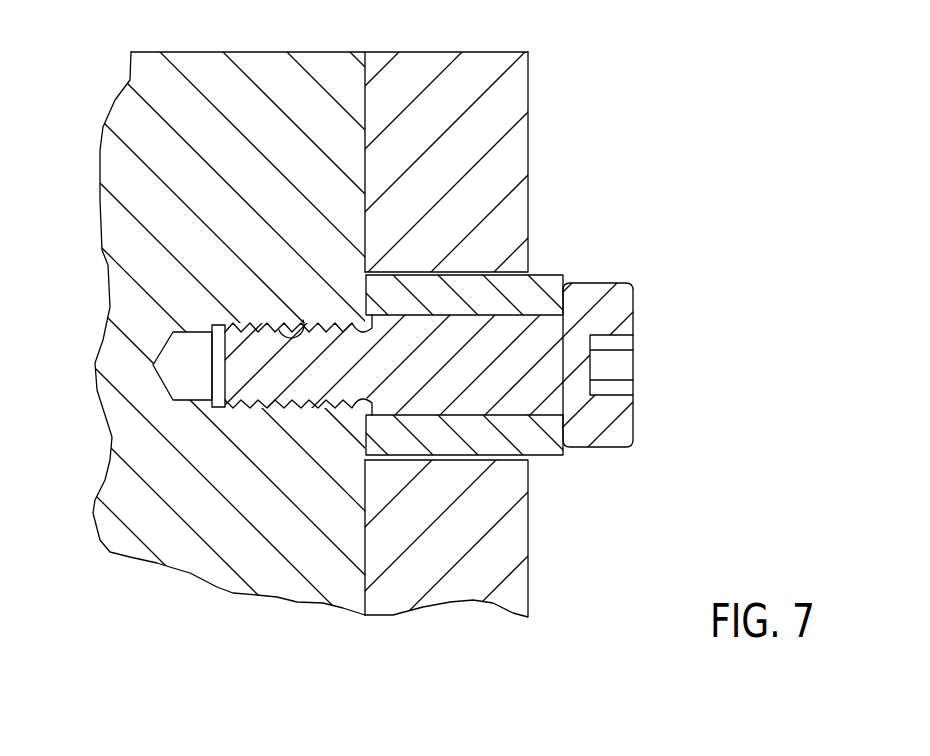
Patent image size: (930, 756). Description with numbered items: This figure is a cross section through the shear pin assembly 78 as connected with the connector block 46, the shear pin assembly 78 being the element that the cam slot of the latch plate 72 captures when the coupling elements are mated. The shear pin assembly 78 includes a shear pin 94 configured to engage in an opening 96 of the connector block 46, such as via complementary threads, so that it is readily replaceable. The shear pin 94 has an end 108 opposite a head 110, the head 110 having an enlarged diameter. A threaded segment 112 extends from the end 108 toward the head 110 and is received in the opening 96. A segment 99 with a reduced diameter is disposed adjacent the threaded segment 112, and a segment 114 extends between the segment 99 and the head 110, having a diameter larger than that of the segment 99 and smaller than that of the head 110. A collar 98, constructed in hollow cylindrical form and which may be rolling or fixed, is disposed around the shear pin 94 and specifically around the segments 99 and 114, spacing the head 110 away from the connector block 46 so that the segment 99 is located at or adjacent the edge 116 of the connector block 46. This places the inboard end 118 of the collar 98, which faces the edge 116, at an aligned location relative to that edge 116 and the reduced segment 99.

The connector block 46 is at (238, 52).
The latch plate 72 is at (528, 585).
The shear pin assembly 78 is at (626, 243).
The shear pin 94 is at (633, 315).
The opening 96 is at (303, 320).
The collar 98 is at (489, 460).
The segment 99 is at (367, 313).
The end 108 is at (203, 332).
The head 110 is at (624, 426).
The threaded segment 112 is at (257, 410).
The segment 114 is at (467, 313).
The edge 116 is at (367, 100).
The inboard end 118 is at (367, 417).